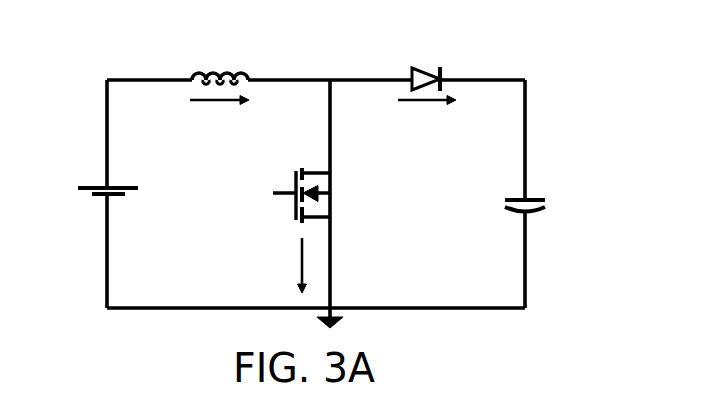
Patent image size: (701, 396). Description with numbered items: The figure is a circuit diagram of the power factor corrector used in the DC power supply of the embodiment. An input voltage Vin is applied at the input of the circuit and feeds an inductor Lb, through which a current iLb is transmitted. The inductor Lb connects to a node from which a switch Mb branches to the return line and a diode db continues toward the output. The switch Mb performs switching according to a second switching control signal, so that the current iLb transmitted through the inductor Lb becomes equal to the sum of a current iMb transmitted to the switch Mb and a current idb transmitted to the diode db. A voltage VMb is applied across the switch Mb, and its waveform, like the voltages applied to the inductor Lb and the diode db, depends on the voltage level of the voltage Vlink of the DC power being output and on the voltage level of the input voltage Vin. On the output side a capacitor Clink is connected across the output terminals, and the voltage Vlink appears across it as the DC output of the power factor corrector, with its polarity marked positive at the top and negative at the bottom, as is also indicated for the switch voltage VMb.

The input voltage Vin is at (89, 190).
The inductor Lb is at (220, 61).
The current transmitted through the inductor iLb is at (219, 115).
The diode db is at (425, 64).
The current transmitted to the diode idb is at (427, 114).
The switch Mb is at (282, 195).
The current transmitted to the switch iMb is at (283, 265).
The voltage applied to the switch VMb is at (380, 227).
The DC link capacitor Clink is at (501, 200).
The voltage of DC power being output Vlink is at (572, 182).